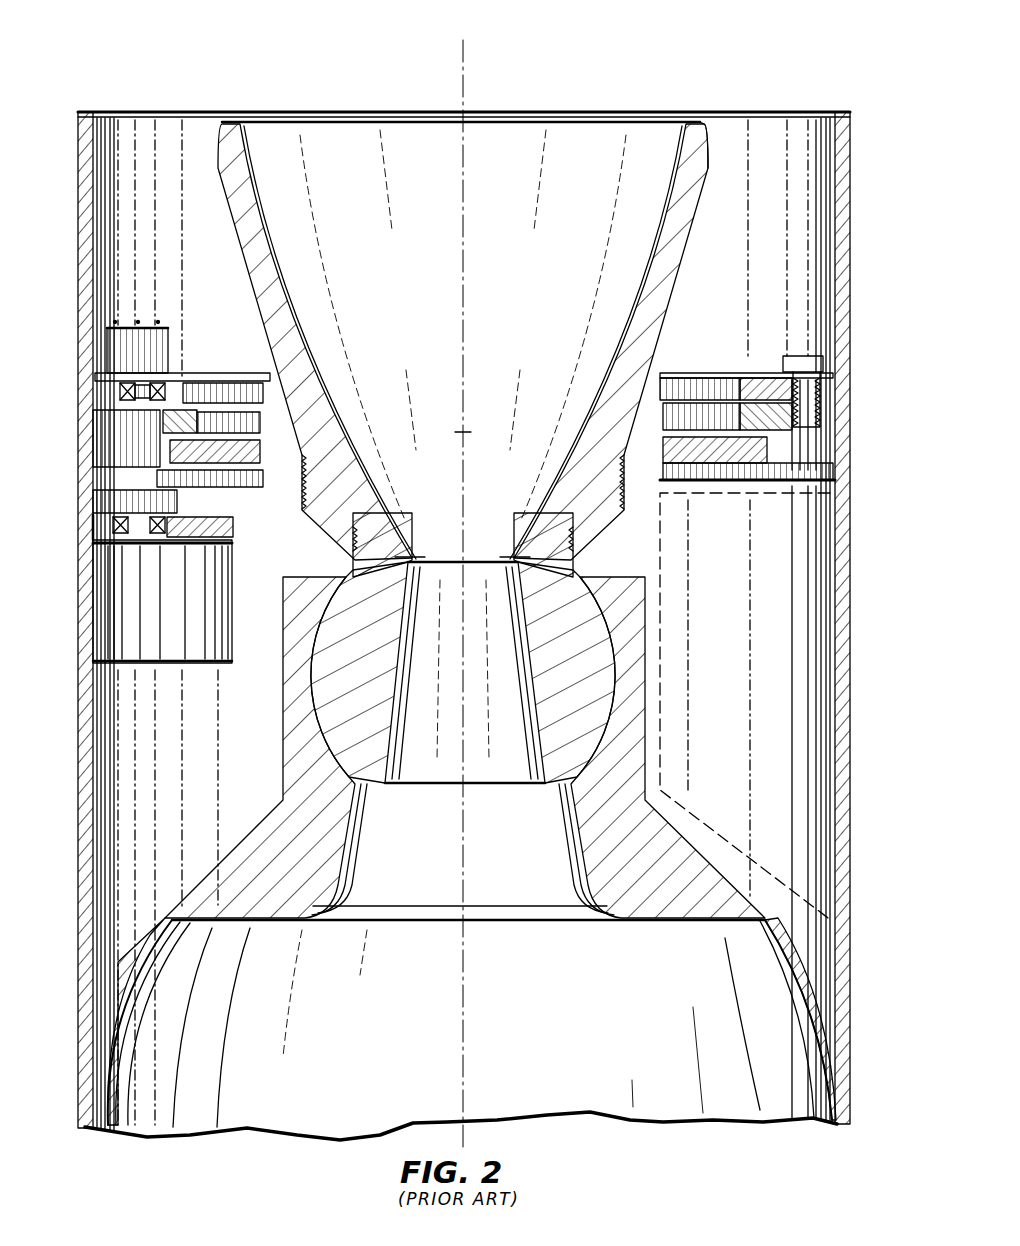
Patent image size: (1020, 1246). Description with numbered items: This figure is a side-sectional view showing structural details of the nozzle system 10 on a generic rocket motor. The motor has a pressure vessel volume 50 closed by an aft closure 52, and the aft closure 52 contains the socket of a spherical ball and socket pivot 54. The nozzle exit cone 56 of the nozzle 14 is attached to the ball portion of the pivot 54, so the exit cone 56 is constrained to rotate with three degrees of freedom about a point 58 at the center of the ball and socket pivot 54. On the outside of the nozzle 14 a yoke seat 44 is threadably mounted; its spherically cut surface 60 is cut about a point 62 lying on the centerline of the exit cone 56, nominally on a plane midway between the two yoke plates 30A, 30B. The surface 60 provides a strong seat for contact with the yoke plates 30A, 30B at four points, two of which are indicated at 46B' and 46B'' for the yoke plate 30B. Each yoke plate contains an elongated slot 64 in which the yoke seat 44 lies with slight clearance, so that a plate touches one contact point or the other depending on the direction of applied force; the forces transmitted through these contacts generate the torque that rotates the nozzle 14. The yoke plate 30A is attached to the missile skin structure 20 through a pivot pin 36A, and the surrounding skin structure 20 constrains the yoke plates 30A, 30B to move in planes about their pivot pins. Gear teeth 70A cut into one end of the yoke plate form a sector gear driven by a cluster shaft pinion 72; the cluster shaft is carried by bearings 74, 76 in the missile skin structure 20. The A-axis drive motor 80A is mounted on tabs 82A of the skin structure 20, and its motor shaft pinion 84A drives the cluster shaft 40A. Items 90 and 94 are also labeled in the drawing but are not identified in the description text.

The nozzle system 10 is at (792, 52).
The nozzle 14 is at (712, 142).
The missile skin structure 20 is at (840, 250).
The yoke plate 30A is at (838, 430).
The yoke plate 30B is at (770, 496).
The pivot pin 36A is at (795, 356).
The cluster shaft 40A is at (110, 470).
The yoke seat 44 is at (272, 380).
The contact point 46B' is at (612, 538).
The contact point 46B'' is at (329, 545).
The pressure vessel volume 50 is at (412, 1032).
The aft closure 52 is at (820, 998).
The ball and socket pivot 54 is at (585, 770).
The nozzle exit cone 56 is at (665, 185).
The point 58 is at (456, 665).
The spherically cut surface 60 is at (256, 500).
The point 62 is at (460, 432).
The elongated slot 64 is at (720, 378).
The gear teeth 70A is at (166, 382).
The cluster shaft pinion 72 is at (95, 447).
The bearing 74 is at (93, 382).
The bearing 76 is at (90, 545).
The A-axis drive motor 80A is at (155, 665).
The tabs 82A is at (100, 521).
The motor shaft pinion 84A is at (168, 602).
The pivot line 90 is at (838, 620).
The connector block 94 is at (160, 325).